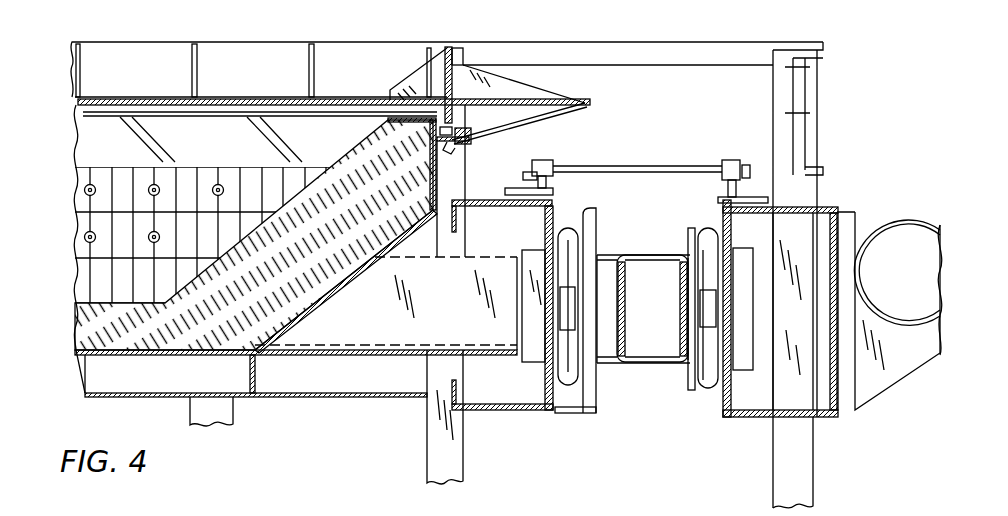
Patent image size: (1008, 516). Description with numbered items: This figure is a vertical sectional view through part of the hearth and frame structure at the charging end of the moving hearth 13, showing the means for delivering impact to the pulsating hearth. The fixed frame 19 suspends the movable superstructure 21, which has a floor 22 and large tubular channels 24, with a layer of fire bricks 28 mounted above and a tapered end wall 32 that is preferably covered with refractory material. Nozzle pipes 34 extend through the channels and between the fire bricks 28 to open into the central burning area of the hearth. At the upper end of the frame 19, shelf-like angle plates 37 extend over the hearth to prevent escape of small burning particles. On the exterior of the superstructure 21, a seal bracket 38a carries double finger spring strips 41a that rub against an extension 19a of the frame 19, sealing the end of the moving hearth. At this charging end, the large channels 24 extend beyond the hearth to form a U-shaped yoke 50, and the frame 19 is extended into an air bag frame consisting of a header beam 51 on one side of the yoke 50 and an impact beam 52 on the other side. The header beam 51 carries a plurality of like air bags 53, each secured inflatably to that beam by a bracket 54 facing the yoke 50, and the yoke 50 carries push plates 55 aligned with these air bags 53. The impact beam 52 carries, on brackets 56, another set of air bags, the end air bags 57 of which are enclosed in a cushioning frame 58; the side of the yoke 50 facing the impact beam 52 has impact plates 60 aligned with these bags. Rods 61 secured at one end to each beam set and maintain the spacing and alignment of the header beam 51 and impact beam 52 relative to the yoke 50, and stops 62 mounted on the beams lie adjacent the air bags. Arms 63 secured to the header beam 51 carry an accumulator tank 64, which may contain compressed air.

The hearth 13 is at (60, 338).
The fixed frame 19 is at (670, 44).
The extension of the frame 19a is at (556, 102).
The movable superstructure 21 is at (80, 150).
The floor 22 is at (100, 396).
The large tubular channels 24 is at (372, 339).
The fire bricks 28 is at (74, 247).
The end wall 32 is at (368, 156).
The nozzle pipes 34 is at (84, 190).
The angle plates 37 is at (80, 102).
The seal bracket 38a is at (468, 134).
The double finger spring strips 41a is at (527, 119).
The U-shaped yoke 50 is at (648, 362).
The header beam 51 is at (734, 218).
The impact beam 52 is at (512, 204).
The air bags 53 is at (692, 392).
The bracket 54 is at (717, 410).
The push plates 55 is at (682, 362).
The brackets 56 is at (551, 414).
The end air bags 57 is at (567, 230).
The cushioning frame 58 is at (578, 414).
The impact plates 60 is at (610, 277).
The rods 61 is at (638, 168).
The stops 62 is at (705, 317).
The arms 63 is at (880, 392).
The accumulator tank 64 is at (898, 218).